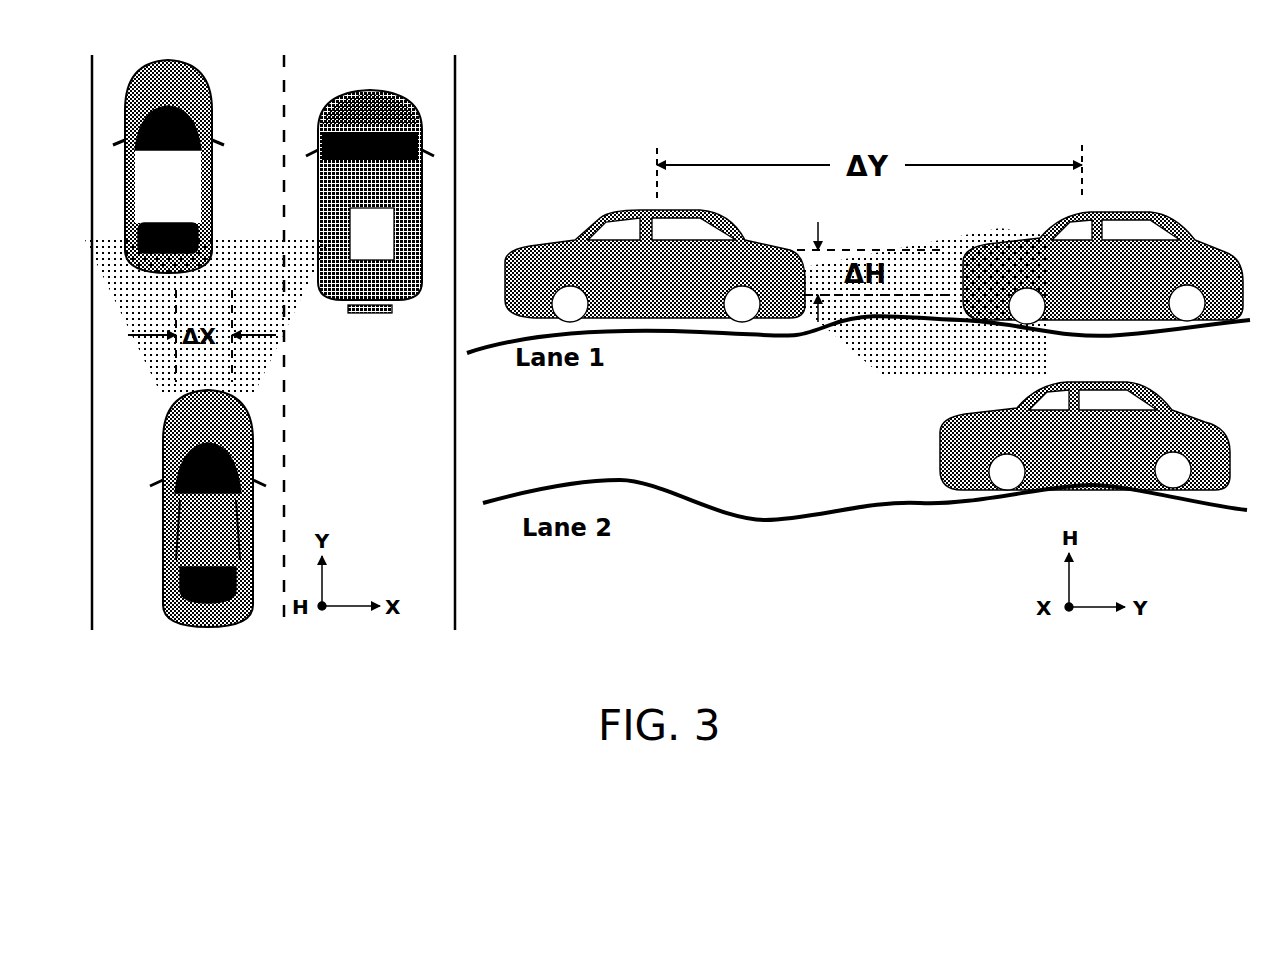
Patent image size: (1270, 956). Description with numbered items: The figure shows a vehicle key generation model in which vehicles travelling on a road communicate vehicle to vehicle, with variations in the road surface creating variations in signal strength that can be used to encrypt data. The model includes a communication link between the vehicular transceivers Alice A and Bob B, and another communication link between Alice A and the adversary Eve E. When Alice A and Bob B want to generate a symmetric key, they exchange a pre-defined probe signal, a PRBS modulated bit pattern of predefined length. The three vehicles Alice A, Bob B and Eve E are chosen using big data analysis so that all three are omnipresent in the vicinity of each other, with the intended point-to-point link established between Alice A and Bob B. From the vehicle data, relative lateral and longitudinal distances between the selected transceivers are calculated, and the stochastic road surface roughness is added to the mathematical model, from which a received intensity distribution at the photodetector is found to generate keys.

The Alice vehicular transceiver A is at (477, 418).
The Bob vehicular transceiver B is at (678, 192).
The Eve adversary vehicle E is at (768, 290).